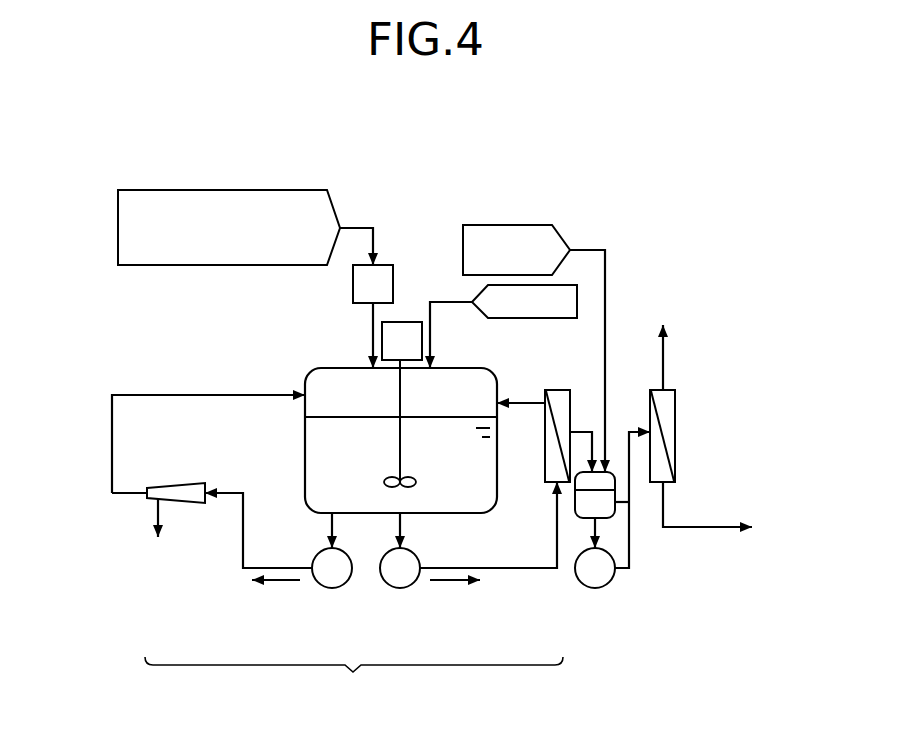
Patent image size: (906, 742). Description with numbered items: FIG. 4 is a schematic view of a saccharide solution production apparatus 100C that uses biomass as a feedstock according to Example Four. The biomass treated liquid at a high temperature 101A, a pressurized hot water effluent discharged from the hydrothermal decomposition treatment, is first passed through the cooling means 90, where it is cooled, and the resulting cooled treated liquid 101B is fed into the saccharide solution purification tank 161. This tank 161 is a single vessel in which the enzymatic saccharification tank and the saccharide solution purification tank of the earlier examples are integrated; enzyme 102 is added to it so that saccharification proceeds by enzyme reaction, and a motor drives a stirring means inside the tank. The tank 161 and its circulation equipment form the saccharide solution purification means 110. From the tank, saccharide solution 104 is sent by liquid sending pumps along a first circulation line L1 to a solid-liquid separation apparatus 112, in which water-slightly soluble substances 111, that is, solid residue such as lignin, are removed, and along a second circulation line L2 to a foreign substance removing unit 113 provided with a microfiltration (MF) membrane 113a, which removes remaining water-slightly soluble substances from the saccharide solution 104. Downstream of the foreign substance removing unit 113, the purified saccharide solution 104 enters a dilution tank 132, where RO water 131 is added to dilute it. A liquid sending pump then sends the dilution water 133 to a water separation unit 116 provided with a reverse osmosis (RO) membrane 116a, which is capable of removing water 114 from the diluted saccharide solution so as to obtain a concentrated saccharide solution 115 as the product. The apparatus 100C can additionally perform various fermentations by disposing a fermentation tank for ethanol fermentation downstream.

The saccharide solution production apparatus 100C is at (552, 162).
The biomass treated liquid at a high temperature 101A is at (228, 190).
The cooled treated liquid 101B is at (373, 328).
The cooling means 90 is at (353, 283).
The enzyme 102 is at (503, 318).
The RO water 131 is at (497, 225).
The saccharide solution purification tank 161 is at (450, 513).
The solid-liquid separation apparatus 112 is at (178, 487).
The water-slightly soluble substances 111 is at (152, 518).
The first circulation line L1 is at (243, 552).
The second circulation line L2 is at (559, 548).
The saccharide solution 104 is at (278, 580).
The foreign substance removing unit 113 is at (548, 490).
The microfiltration (MF) membrane 113a is at (558, 420).
The dilution tank 132 is at (618, 500).
The dilution water 133 is at (631, 548).
The water separation unit 116 is at (686, 452).
The reverse osmosis (RO) membrane 116a is at (676, 428).
The water 114 is at (660, 365).
The concentrated saccharide solution 115 is at (720, 528).
The saccharide solution purification means 110 is at (354, 678).